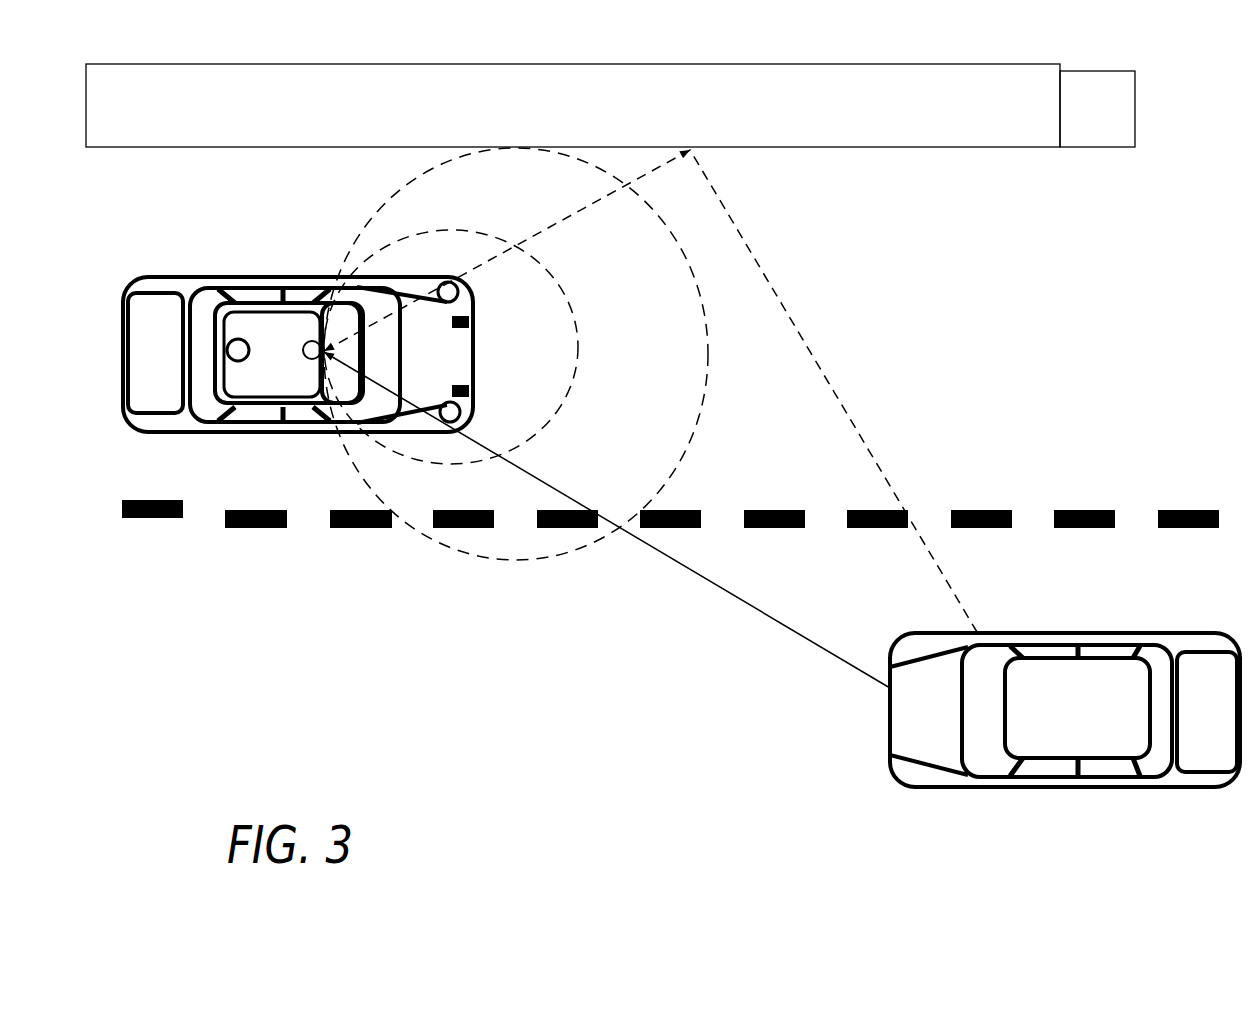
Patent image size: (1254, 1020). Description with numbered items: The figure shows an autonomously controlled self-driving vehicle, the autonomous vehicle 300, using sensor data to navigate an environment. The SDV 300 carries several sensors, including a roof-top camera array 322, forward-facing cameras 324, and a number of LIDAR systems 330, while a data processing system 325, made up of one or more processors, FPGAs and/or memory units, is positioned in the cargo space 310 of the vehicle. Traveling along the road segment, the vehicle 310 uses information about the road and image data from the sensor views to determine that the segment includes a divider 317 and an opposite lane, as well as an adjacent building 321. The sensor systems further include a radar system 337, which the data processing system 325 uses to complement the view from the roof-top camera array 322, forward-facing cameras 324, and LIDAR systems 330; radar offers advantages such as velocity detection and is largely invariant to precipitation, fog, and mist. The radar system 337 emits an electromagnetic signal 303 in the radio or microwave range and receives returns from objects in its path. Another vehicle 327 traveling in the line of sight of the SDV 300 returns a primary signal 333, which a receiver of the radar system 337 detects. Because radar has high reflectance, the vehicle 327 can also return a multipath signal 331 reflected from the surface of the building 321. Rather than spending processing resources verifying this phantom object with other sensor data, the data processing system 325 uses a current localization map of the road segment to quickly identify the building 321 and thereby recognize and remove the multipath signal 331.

The autonomous vehicle 300 is at (133, 250).
The electromagnetic signal 303 is at (516, 354).
The cargo space 310 is at (314, 307).
The divider 317 is at (330, 529).
The building 321 is at (610, 105).
The roof-top camera array 322 is at (272, 354).
The forward-facing cameras 324 is at (472, 320).
The data processing system 325 is at (155, 353).
The vehicle 327 is at (1041, 713).
The LIDAR systems 330 is at (242, 339).
The multipath signal 331 is at (650, 391).
The primary signal 333 is at (607, 520).
The radar system 337 is at (312, 341).